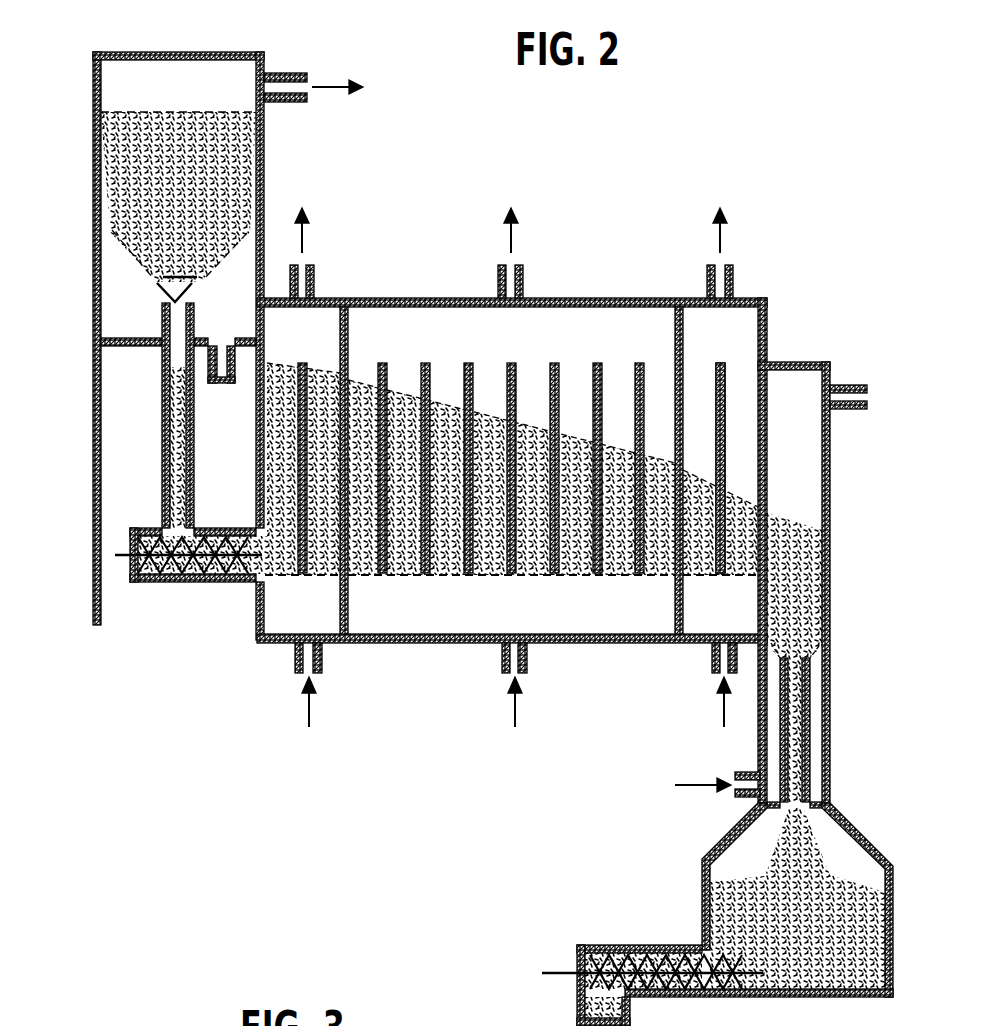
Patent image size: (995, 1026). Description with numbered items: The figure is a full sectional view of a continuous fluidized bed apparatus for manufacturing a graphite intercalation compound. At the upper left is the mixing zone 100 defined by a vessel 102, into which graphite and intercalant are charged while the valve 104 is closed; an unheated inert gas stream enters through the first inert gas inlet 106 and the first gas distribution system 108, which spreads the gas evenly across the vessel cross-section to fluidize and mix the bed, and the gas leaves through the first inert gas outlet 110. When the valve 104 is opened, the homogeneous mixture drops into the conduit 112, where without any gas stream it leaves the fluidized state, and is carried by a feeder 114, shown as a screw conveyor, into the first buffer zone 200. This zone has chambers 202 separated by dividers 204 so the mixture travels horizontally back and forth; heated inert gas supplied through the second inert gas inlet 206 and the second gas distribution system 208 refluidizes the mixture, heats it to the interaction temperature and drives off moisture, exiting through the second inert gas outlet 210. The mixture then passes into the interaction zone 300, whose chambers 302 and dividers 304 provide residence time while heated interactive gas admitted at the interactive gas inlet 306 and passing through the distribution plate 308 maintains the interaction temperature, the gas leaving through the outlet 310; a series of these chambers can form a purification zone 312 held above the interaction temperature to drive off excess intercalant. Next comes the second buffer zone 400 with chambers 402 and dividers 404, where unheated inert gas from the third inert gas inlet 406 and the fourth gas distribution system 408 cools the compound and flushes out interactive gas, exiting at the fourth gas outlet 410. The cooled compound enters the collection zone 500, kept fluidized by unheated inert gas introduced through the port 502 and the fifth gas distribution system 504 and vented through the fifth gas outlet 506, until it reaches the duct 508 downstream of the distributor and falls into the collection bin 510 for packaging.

The mixing zone 100 is at (195, 93).
The vessel 102 is at (127, 147).
The valve 104 is at (190, 287).
The first inert gas inlet 106 is at (223, 385).
The first gas distribution system 108 is at (140, 280).
The first inert gas outlet 110 is at (283, 86).
The conduit 112 is at (162, 470).
The feeder 114 is at (152, 582).
The first buffer zone 200 is at (328, 334).
The chambers 202 is at (322, 377).
The dividers 204 is at (298, 473).
The second inert gas inlet 206 is at (297, 662).
The second gas distribution system 208 is at (283, 577).
The second inert gas outlet 210 is at (303, 286).
The interaction zone 300 is at (552, 334).
The chambers 302 is at (405, 393).
The dividers 304 is at (470, 362).
The interactive gas inlet 306 is at (505, 660).
The gas distributor plate 308 is at (487, 577).
The gas outlet pipe 310 is at (513, 288).
The purification zone 312 is at (643, 351).
The second buffer zone 400 is at (742, 331).
The chambers 402 is at (720, 451).
The dividers 404 is at (725, 440).
The third inert gas inlet 406 is at (716, 660).
The fourth gas distribution system 408 is at (708, 577).
The fourth gas outlet 410 is at (722, 287).
The collection zone 500 is at (818, 404).
The fourth inert gas outlet 502 is at (750, 772).
The fifth gas distribution system 504 is at (823, 658).
The fifth gas outlet 506 is at (853, 387).
The duct 508 is at (803, 723).
The collection bin 510 is at (838, 835).